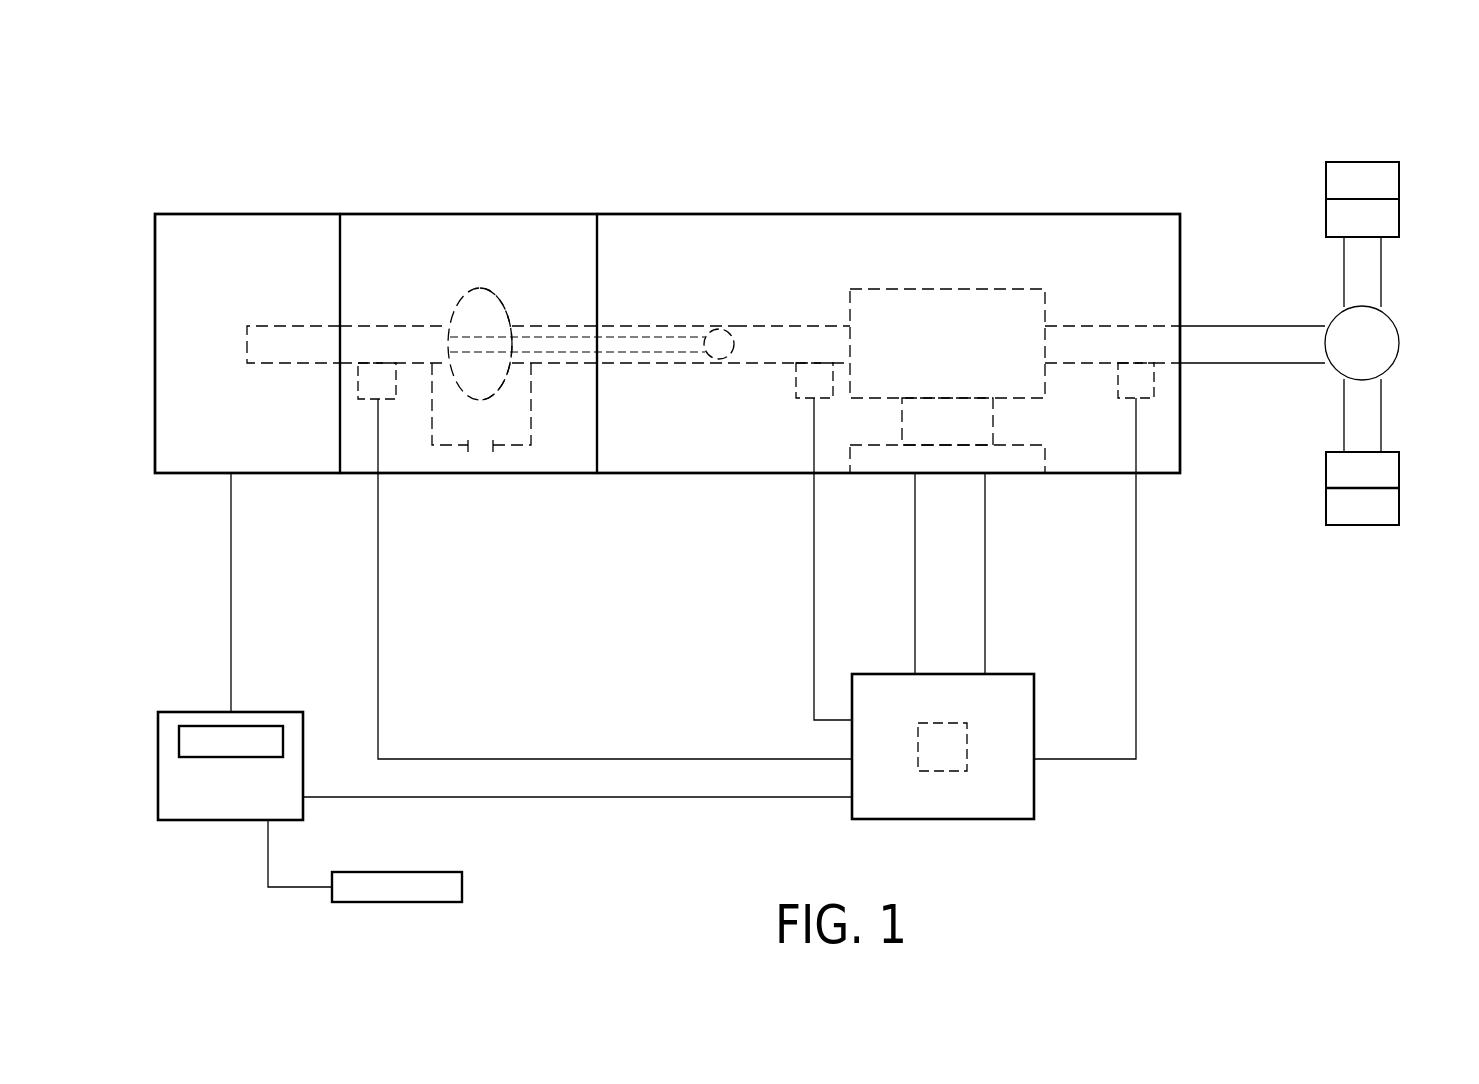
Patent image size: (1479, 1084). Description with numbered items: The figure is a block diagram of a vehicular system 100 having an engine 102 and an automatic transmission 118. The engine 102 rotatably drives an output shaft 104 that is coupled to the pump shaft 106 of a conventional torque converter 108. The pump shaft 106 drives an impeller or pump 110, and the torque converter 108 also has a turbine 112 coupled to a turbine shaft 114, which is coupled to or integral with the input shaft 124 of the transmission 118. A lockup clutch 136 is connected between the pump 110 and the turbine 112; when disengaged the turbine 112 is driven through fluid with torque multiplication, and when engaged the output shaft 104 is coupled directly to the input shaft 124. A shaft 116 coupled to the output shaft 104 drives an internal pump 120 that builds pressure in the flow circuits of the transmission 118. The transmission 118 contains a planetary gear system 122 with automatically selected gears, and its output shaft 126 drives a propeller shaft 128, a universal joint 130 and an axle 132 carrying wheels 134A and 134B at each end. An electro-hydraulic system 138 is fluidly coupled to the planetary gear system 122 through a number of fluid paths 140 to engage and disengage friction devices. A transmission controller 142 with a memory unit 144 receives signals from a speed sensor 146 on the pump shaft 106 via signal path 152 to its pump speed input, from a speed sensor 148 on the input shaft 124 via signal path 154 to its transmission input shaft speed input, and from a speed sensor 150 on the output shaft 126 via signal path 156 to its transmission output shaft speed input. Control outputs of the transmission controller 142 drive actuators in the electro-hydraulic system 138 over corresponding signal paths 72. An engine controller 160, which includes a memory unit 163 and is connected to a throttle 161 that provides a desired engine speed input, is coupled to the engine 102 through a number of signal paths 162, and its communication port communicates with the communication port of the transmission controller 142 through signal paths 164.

The vehicular system 100 is at (178, 152).
The engine 102 is at (250, 214).
The output shaft 104 is at (247, 363).
The pump shaft 106 is at (403, 326).
The torque converter 108 is at (465, 214).
The pump 110 is at (460, 297).
The turbine 112 is at (505, 298).
The turbine shaft 114 is at (568, 326).
The shaft 116 is at (645, 347).
The automatic transmission 118 is at (840, 214).
The internal pump 120 is at (730, 330).
The planetary gear system 122 is at (969, 358).
The input shaft 124 is at (830, 326).
The output shaft 126 is at (1099, 326).
The propeller shaft 128 is at (1253, 326).
The universal joint 130 is at (1396, 336).
The axle 132 is at (1382, 270).
The wheel 134A is at (1360, 162).
The wheel 134B is at (1358, 525).
The lockup clutch 136 is at (494, 453).
The electro-hydraulic system 138 is at (1012, 463).
The fluid paths 140 is at (1026, 421).
The transmission controller 142 is at (1035, 792).
The memory unit 144 is at (967, 743).
The speed sensor 146 is at (358, 382).
The speed sensor 148 is at (796, 380).
The speed sensor 150 is at (1154, 380).
The signal path 152 is at (578, 759).
The signal path 154 is at (814, 636).
The signal path 156 is at (1136, 600).
The signal paths 72 is at (1020, 576).
The engine controller 160 is at (225, 820).
The throttle 161 is at (462, 887).
The signal paths 162 is at (231, 560).
The memory unit 163 is at (192, 726).
The signal paths 164 is at (640, 800).